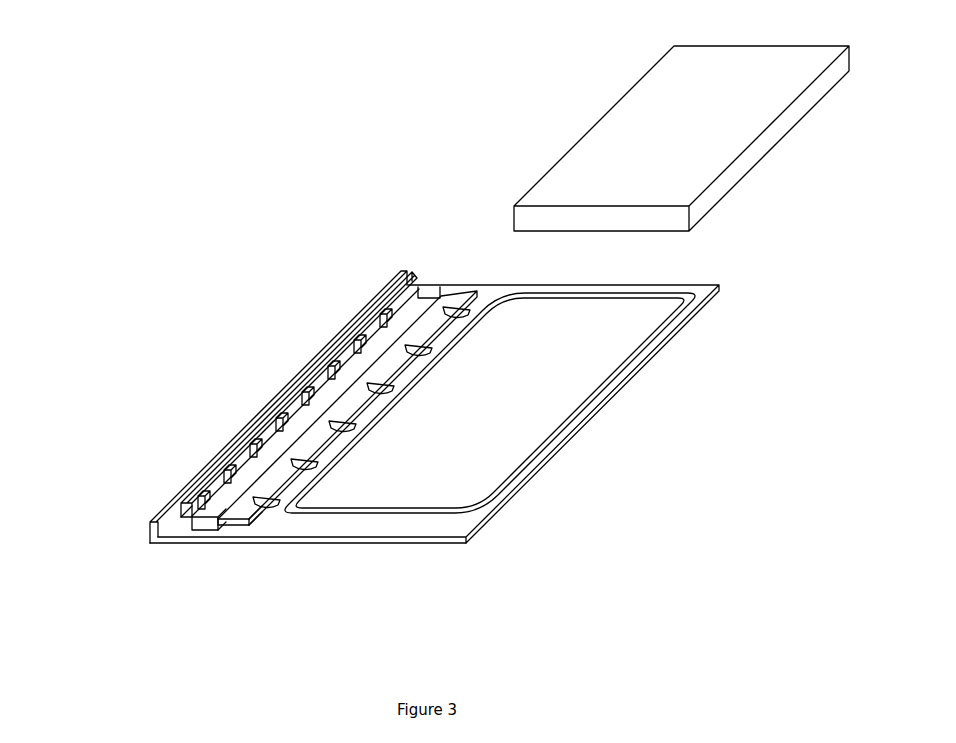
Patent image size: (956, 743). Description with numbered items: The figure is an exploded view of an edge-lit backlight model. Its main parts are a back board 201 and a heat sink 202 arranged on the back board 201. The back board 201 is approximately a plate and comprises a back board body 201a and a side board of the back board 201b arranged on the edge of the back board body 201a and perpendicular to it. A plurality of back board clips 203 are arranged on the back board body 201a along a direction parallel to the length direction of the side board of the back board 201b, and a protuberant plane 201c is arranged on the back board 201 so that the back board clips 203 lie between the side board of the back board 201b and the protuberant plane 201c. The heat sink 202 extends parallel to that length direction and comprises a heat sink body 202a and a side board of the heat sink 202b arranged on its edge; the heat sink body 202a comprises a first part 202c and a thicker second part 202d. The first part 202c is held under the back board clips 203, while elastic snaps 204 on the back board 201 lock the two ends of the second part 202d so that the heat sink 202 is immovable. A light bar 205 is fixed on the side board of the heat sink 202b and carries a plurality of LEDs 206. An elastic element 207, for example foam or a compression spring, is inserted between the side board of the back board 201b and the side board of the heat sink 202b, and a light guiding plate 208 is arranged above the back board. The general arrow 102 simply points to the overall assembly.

The card connector assembly 102 is at (342, 172).
The back board 201 is at (375, 460).
The back board body 201a is at (398, 530).
The side board of the back board 201b is at (153, 527).
The protuberant plane 201c is at (537, 422).
The heat sink 202 is at (332, 478).
The heat sink body 202a is at (220, 528).
The side board of the heat sink 202b is at (178, 508).
The first part 202c is at (255, 512).
The second part 202d is at (218, 512).
The back board clips 203 is at (372, 398).
The elastic snaps 204 is at (430, 287).
The light bar 205 is at (222, 462).
The LEDs 206 is at (279, 422).
The elastic element 207 is at (175, 503).
The light guiding plate 208 is at (732, 127).